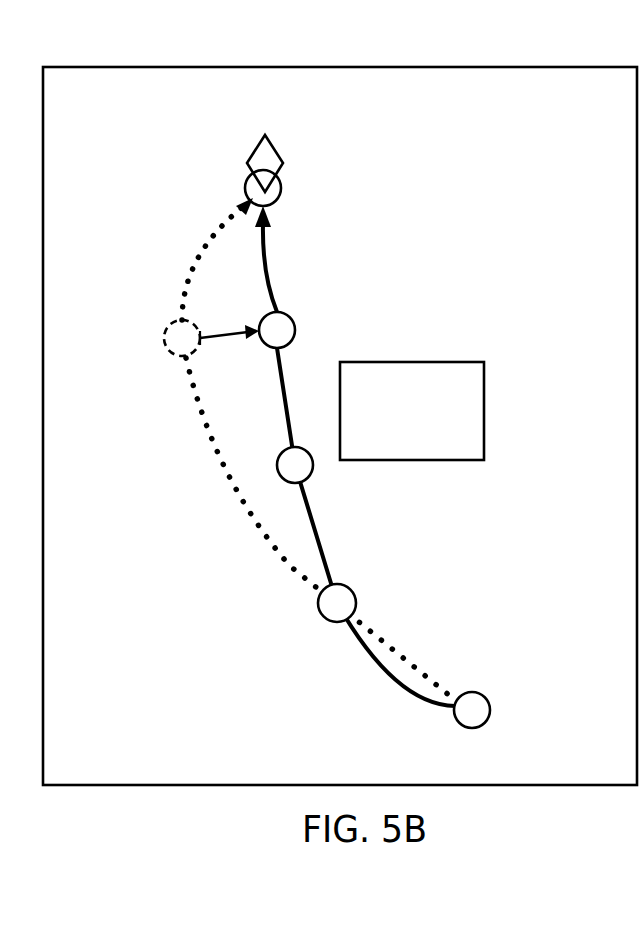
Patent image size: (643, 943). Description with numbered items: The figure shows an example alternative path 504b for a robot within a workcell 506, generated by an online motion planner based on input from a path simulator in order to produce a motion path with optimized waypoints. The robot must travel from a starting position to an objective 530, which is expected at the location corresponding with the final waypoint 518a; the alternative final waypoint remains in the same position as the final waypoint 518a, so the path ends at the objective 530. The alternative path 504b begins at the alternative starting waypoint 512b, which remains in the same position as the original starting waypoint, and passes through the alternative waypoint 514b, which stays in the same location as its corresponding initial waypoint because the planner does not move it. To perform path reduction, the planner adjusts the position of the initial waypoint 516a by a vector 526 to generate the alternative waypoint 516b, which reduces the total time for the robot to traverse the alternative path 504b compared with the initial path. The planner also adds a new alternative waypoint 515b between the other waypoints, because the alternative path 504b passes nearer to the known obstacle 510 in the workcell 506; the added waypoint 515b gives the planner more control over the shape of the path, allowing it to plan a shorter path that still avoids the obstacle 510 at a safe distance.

The workcell 506 is at (131, 67).
The alternative path 504b is at (280, 262).
The objective 530 is at (274, 148).
The final waypoint 518a is at (282, 185).
The vector 526 is at (217, 321).
The waypoint 516a is at (163, 346).
The alternative waypoint 516b is at (295, 330).
The obstacle 510 is at (412, 411).
The alternative waypoint 515b is at (312, 470).
The alternative waypoint 514b is at (325, 621).
The alternative starting waypoint 512b is at (486, 697).